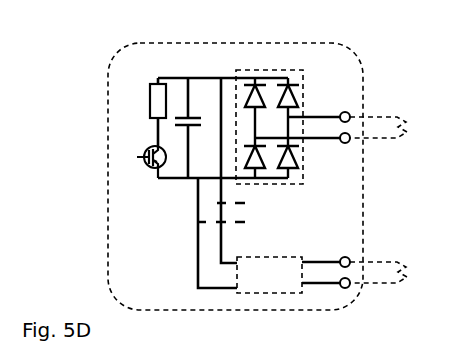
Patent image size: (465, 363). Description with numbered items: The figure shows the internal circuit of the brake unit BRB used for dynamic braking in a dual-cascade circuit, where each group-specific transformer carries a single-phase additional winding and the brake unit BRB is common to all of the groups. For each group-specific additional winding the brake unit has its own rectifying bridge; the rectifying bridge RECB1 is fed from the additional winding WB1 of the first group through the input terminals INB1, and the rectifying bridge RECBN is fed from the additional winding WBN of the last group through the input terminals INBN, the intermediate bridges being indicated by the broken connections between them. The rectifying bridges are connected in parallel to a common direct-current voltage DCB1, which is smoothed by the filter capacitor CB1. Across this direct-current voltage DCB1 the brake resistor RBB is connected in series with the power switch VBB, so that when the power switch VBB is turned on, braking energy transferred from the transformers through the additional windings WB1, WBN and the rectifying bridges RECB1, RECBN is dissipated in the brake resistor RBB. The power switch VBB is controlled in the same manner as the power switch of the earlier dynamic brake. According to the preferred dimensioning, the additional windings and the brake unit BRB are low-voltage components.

The brake unit BRB is at (235, 166).
The direct-current voltage DCB1 is at (223, 115).
The brake resistor RBB is at (139, 112).
The power switch VBB is at (138, 152).
The filter capacitor CB1 is at (196, 128).
The rectifying bridge RECB1 is at (269, 115).
The input terminals IN_B1 INB1 is at (305, 115).
The additional winding WB1 is at (379, 117).
The rectifying bridge RECBN is at (269, 264).
The input terminals IN_BN INBN is at (328, 260).
The additional winding WBN is at (380, 260).